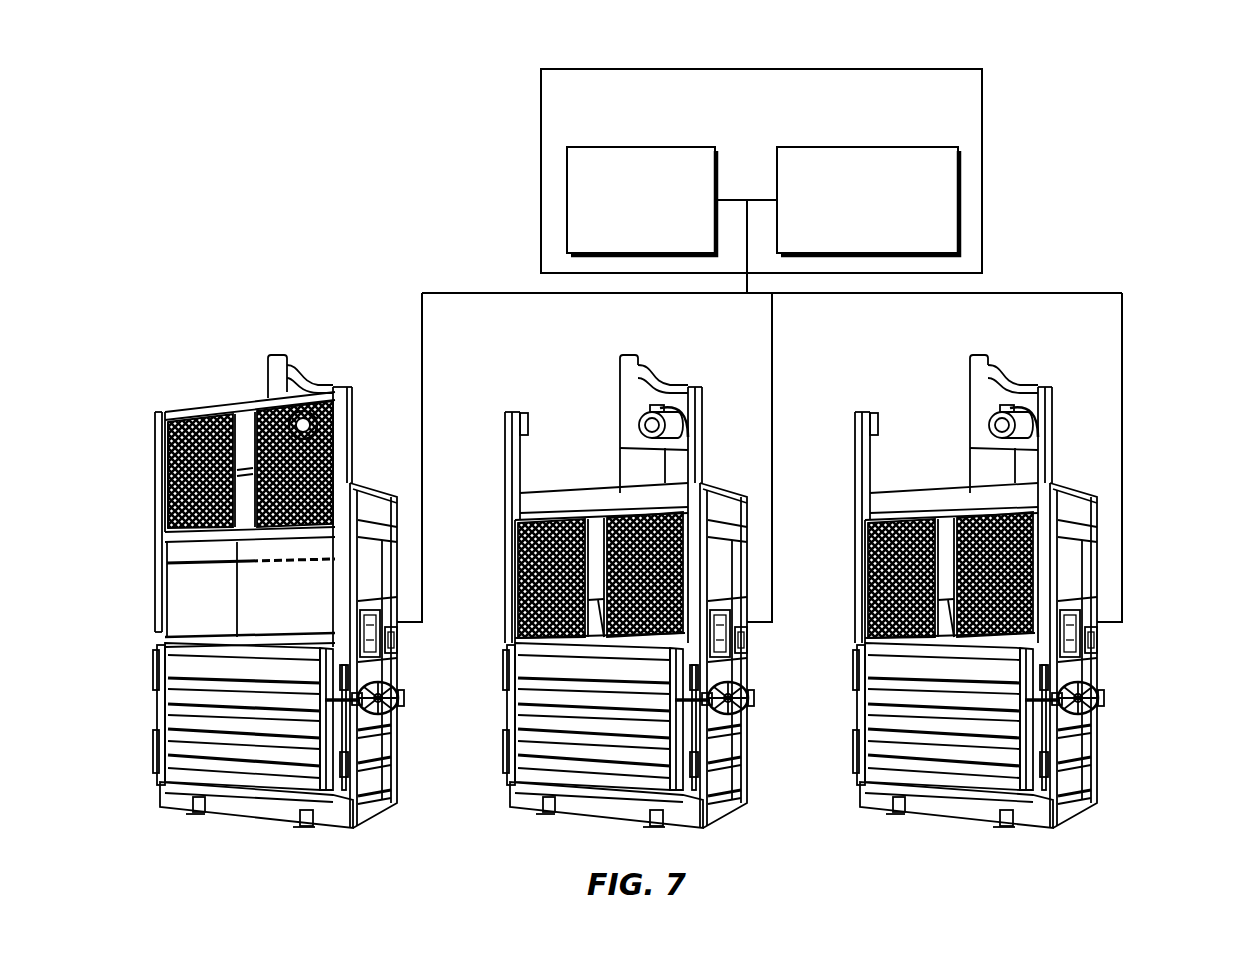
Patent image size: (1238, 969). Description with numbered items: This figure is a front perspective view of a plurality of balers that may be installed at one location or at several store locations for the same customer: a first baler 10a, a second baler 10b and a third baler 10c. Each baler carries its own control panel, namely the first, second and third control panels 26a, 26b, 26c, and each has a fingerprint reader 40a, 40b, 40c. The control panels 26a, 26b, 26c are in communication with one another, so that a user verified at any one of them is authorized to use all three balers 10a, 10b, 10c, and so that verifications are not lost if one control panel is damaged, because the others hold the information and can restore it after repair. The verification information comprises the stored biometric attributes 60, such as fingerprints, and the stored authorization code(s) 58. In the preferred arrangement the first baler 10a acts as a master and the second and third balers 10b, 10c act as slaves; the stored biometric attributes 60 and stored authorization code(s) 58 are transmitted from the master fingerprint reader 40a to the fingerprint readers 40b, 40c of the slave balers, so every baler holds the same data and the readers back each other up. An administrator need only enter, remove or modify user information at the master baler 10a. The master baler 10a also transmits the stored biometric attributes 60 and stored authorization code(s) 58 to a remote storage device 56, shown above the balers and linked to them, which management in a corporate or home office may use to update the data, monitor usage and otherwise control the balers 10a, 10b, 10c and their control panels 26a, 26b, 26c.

The remote storage device 56 is at (888, 69).
The stored authorization code(s) 58 is at (880, 147).
The stored biometric attributes 60 is at (670, 147).
The first baler 10a is at (319, 587).
The second baler 10b is at (667, 586).
The third baler 10c is at (1016, 586).
The first control panel 26a is at (412, 634).
The second control panel 26b is at (773, 633).
The third control panel 26c is at (1122, 633).
The fingerprint reader 40a is at (398, 645).
The fingerprint reader 40b is at (779, 650).
The fingerprint reader 40c is at (1128, 650).